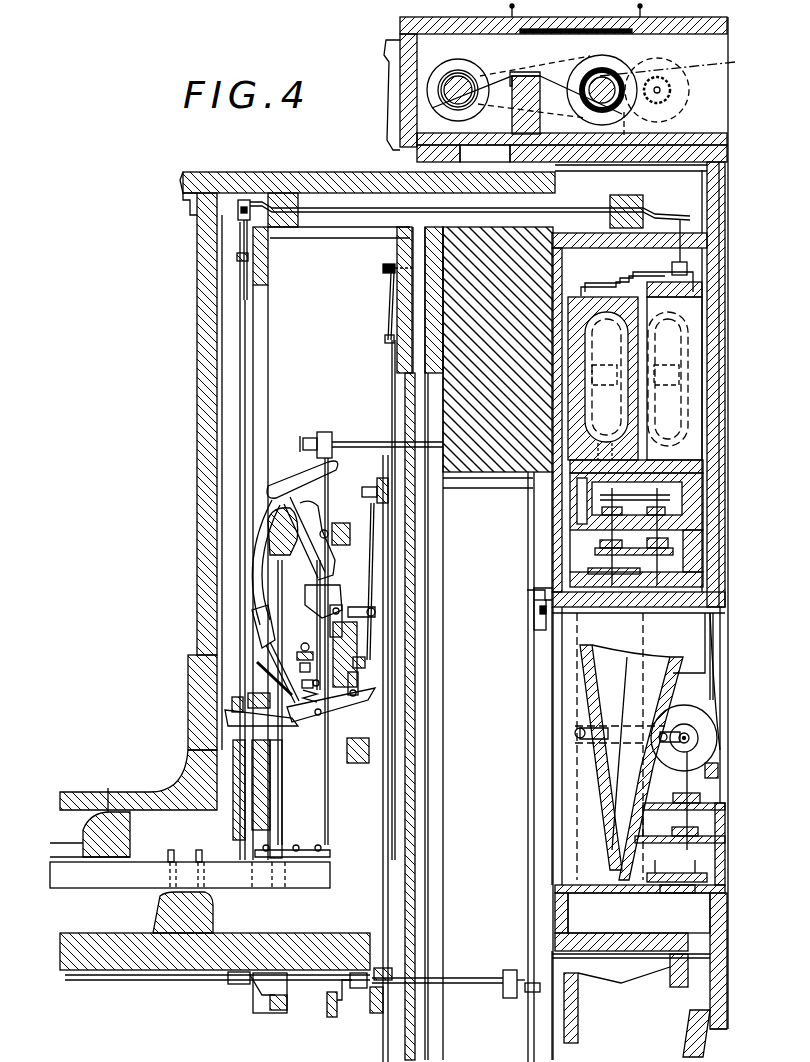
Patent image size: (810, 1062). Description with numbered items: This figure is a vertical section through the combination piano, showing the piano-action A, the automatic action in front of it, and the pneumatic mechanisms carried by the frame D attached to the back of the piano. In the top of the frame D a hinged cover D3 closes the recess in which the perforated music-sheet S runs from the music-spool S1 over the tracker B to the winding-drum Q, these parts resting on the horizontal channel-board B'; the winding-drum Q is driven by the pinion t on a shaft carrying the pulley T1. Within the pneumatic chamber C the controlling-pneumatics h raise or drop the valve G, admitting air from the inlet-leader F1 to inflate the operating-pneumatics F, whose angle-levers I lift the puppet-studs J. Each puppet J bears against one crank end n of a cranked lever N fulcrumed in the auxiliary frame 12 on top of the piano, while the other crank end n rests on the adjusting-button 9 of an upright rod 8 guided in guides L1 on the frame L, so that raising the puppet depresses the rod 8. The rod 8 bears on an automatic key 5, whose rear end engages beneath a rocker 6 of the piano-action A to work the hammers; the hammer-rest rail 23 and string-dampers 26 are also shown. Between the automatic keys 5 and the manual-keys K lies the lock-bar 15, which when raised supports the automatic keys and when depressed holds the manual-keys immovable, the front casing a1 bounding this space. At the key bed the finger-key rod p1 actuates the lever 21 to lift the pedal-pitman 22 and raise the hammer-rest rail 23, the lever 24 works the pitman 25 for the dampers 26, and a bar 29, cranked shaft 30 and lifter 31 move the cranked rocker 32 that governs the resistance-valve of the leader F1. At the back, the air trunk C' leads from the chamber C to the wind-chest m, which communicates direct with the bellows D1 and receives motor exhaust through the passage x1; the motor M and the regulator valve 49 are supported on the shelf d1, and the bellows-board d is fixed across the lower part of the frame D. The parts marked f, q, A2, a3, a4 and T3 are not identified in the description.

The hinged cover D3 is at (400, 26).
The horizontal channel-board B' is at (729, 523).
The wall portion f is at (728, 178).
The tracker B is at (523, 88).
The music-spool S1 is at (450, 73).
The winding-drum Q is at (585, 64).
The perforated music-sheet S is at (527, 87).
The pinion t is at (657, 90).
The pulley T1 is at (681, 95).
The cranked wires or levers N is at (343, 208).
The crank ends n is at (246, 200).
The adjusting-buttons 9 is at (235, 215).
The auxiliary frame 12 is at (298, 225).
The puppet-studs J is at (676, 262).
The angle-levers I is at (633, 275).
The front casing a1 is at (197, 384).
The manual-keys K is at (190, 819).
The pedal-pitman 22 is at (282, 916).
The base plate q is at (102, 927).
The finger-key rod p1 is at (217, 987).
The lever 21 is at (272, 1012).
The bar 29 is at (333, 1017).
The lever 24 is at (372, 1012).
The pitman 25 is at (372, 758).
The support or frame L is at (262, 386).
The guides L1 is at (233, 702).
The upright rods or operators 8 is at (243, 412).
The central block A2 is at (418, 585).
The pin a3 is at (390, 290).
The rod a4 is at (391, 400).
The piano-action A is at (347, 638).
The hammer-rest rail 23 is at (272, 528).
The string-dampers 26 is at (380, 488).
The rockers or tilting members 6 is at (325, 708).
The automatic keys 5 is at (237, 717).
The lock-bar 15 is at (233, 830).
The lifter 31 is at (517, 767).
The cranked rocker 32 is at (527, 590).
The cranked shaft 30 is at (456, 975).
The wind-chest or pneumatic chamber C is at (653, 420).
The operating-pneumatics F is at (636, 386).
The inlet-leader F1 is at (636, 529).
The valve G is at (670, 547).
The controlling-pneumatics h is at (602, 570).
The air trunk or conductor C' is at (638, 746).
The rod T3 is at (715, 660).
The frame D is at (722, 706).
The motor or air-engine M is at (726, 838).
The regulator valve 49 is at (685, 858).
The wind-chest chamber m is at (641, 957).
The air-passage x1 is at (672, 893).
The shelf d1 is at (727, 944).
The bellows D1 is at (620, 1005).
The bellows-board d is at (705, 1035).